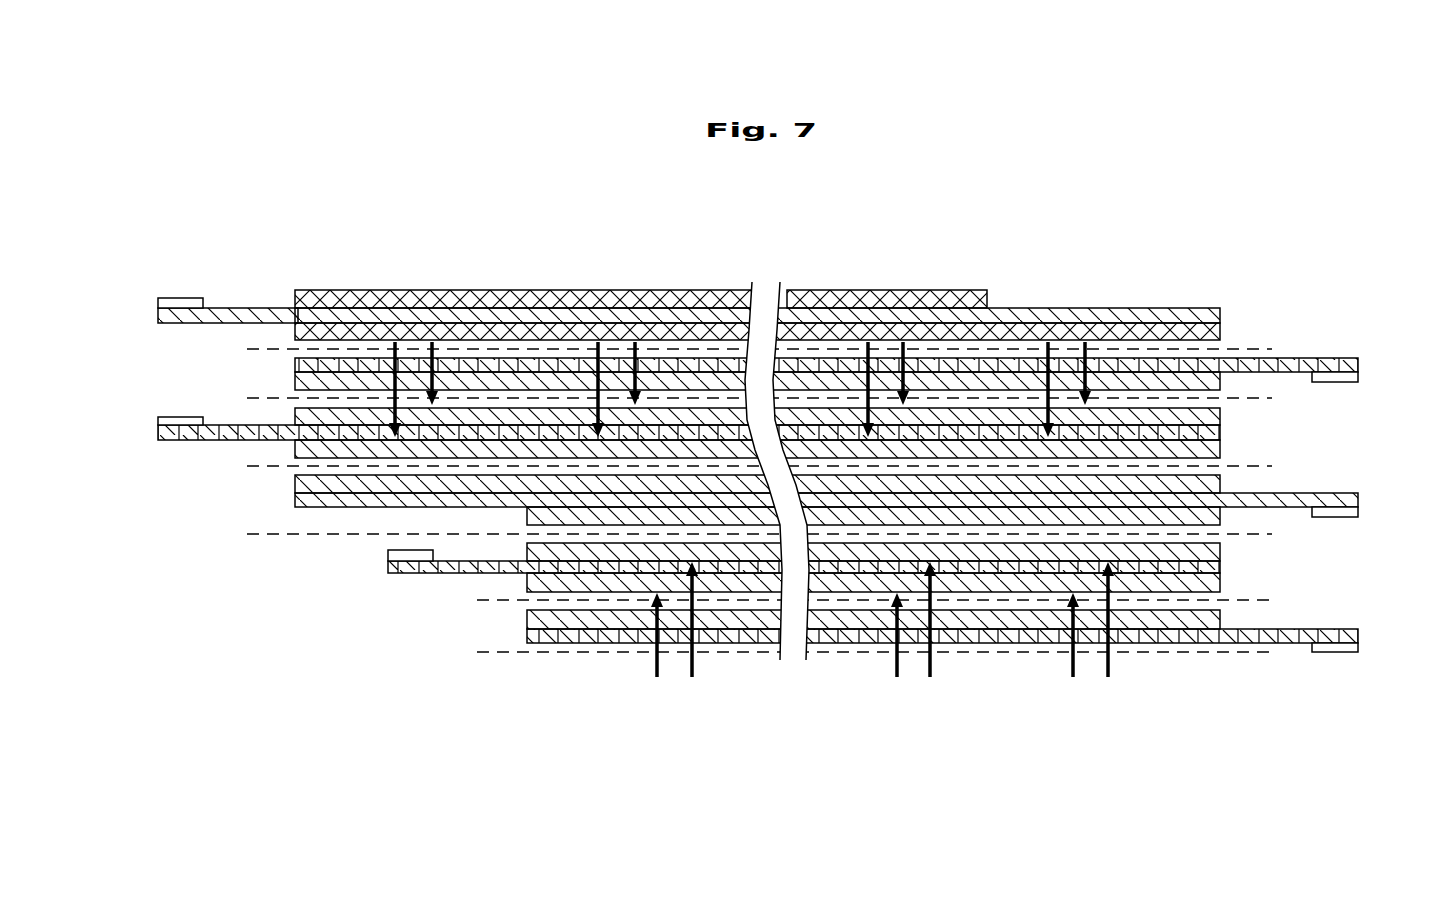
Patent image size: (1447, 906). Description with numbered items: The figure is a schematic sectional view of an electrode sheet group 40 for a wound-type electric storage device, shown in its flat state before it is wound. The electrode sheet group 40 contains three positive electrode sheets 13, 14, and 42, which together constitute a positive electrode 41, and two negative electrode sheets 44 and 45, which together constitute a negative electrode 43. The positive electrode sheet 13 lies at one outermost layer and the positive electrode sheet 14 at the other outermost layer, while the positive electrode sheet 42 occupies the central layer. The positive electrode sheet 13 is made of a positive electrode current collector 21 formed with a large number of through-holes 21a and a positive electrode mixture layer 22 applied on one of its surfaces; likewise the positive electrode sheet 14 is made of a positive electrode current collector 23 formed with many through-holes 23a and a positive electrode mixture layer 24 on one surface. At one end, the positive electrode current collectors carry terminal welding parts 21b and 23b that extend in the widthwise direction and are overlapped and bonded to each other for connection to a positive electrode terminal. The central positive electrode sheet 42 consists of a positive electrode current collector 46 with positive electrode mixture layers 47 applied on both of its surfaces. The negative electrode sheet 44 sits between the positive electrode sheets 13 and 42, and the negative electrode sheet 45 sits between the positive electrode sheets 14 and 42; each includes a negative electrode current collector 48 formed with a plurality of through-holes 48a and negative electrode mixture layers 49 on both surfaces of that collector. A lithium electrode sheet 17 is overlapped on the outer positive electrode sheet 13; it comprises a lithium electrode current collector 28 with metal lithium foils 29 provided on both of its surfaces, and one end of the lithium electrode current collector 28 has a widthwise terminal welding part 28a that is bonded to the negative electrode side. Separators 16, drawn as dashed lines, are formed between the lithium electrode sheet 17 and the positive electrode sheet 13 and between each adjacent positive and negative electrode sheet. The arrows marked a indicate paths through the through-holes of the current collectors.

The electrode sheet group 40 is at (332, 672).
The lithium electrode sheet 17 is at (757, 270).
The metal lithium foils 29 is at (975, 300).
The lithium electrode current collector 28 is at (1003, 315).
The terminal welding part 28a is at (178, 303).
The positive electrode sheet 13 is at (750, 370).
The positive electrode current collector 21 is at (300, 365).
The positive electrode mixture layer 22 is at (300, 384).
The through-holes 21a is at (480, 365).
The terminal welding part 21b is at (1360, 378).
The separators 16 is at (265, 400).
The negative electrode sheet 44 is at (1313, 395).
The negative electrode sheet 45 is at (1313, 530).
The negative electrode mixture layers 49 is at (1200, 416).
The negative electrode current collector 48 is at (1200, 433).
The through-holes 48a is at (568, 432).
The negative electrode 43 is at (146, 446).
The positive electrode sheet 42 is at (751, 500).
The positive electrode mixture layers 47 is at (305, 485).
The positive electrode current collector 46 is at (310, 500).
The positive electrode 41 is at (1338, 345).
The positive electrode sheet 14 is at (876, 626).
The positive electrode mixture layer 24 is at (548, 620).
The positive electrode current collector 23 is at (560, 638).
The through-holes 23a is at (713, 636).
The terminal welding part 23b is at (1360, 647).
The flow direction a is at (749, 509).